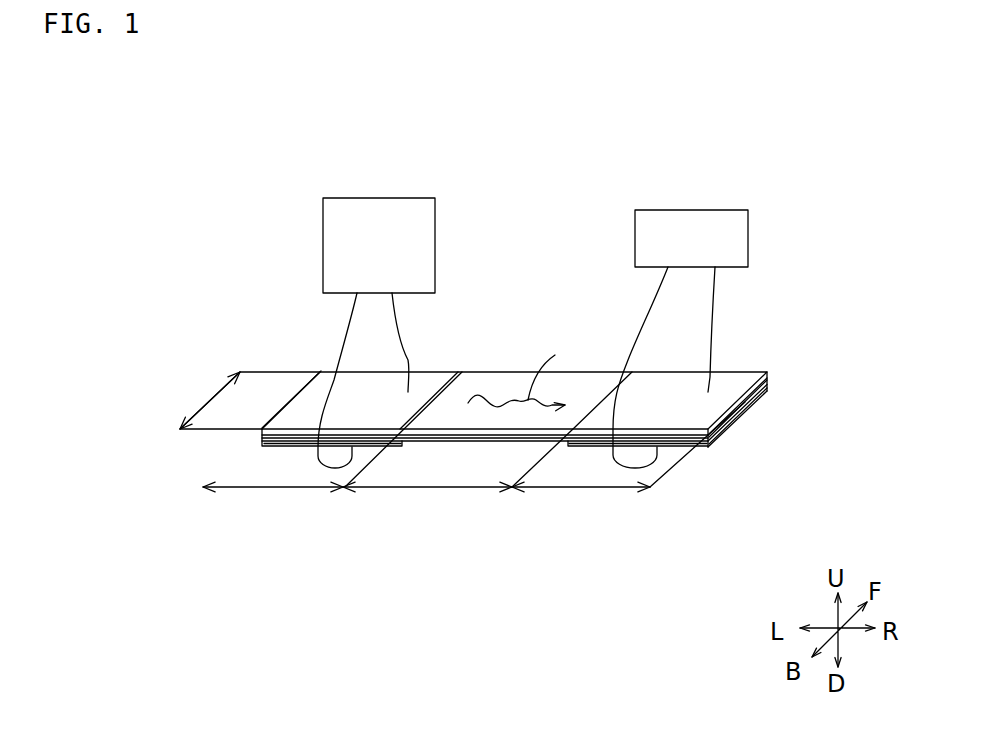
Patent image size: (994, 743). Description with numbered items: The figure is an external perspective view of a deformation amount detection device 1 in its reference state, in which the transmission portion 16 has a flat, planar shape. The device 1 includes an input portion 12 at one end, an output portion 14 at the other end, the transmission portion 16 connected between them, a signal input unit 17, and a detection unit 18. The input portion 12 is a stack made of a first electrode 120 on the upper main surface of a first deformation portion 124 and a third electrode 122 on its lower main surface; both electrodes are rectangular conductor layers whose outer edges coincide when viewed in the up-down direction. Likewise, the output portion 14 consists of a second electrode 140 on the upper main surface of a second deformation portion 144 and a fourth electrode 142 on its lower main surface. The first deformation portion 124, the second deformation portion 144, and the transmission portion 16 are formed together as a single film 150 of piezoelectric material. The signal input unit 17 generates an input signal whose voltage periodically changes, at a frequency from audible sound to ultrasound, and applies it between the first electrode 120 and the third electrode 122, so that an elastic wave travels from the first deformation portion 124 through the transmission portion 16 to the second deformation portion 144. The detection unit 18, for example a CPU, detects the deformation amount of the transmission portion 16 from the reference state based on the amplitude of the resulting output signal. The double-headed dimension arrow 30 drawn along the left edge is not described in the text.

The deformation amount detection device 1 is at (318, 115).
The input portion 12 is at (333, 370).
The output portion 14 is at (728, 367).
The transmission portion 16 is at (482, 388).
The signal input unit 17 is at (323, 251).
The detection unit 18 is at (690, 210).
The width direction of substrate 30 is at (196, 400).
The first electrode 120 is at (322, 393).
The third electrode 122 is at (297, 445).
The first deformation portion 124 is at (262, 435).
The second electrode 140 is at (755, 374).
The fourth electrode 142 is at (708, 447).
The second deformation portion 144 is at (752, 398).
The film 150 is at (603, 565).